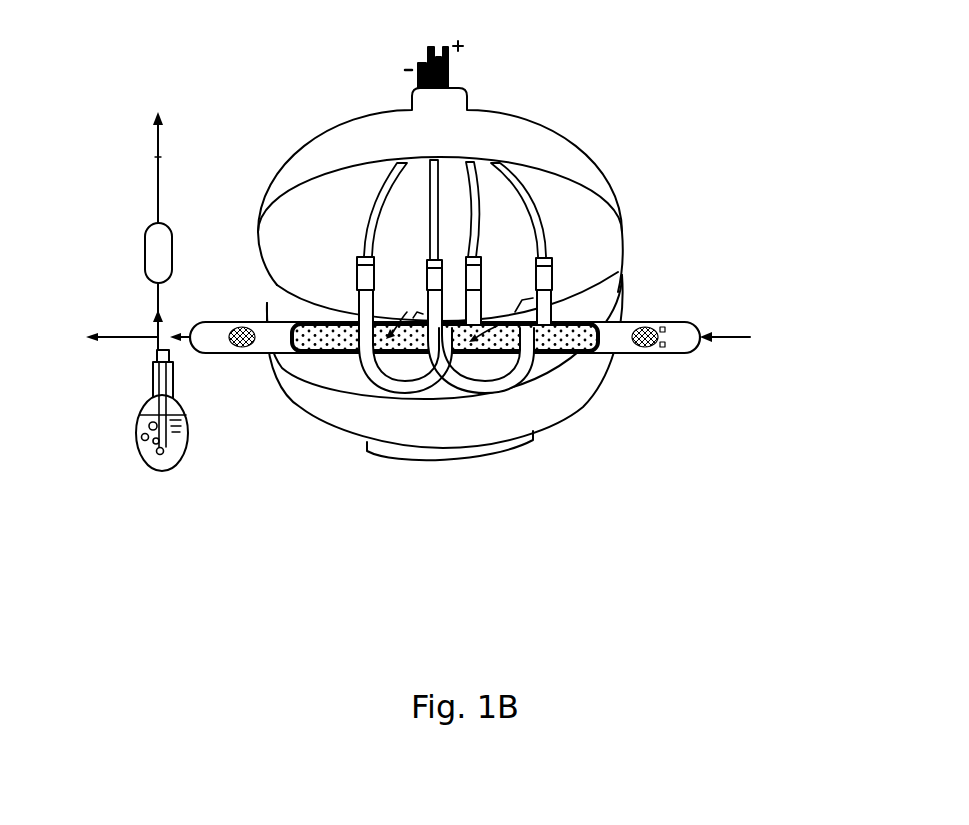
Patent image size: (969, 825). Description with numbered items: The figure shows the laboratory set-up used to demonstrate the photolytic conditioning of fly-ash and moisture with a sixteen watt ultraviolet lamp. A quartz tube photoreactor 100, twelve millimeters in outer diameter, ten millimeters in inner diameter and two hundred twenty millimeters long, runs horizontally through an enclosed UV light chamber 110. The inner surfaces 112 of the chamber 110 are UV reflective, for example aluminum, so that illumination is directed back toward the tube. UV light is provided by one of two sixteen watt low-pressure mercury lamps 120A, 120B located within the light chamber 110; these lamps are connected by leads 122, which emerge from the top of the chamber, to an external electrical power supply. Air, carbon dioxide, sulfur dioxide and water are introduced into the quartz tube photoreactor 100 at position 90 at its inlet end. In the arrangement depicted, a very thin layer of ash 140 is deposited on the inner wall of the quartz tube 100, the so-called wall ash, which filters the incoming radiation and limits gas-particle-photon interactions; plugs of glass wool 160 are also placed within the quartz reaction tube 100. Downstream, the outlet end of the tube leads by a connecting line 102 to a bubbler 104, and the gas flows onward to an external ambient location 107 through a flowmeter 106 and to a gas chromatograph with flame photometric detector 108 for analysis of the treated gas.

The inlet position 90 is at (796, 365).
The quartz tube photoreactor 100 is at (449, 406).
The outlet line to bubbler 102 is at (167, 333).
The bubbler 104 is at (177, 407).
The flowmeter 106 is at (143, 233).
The external ambient location 107 is at (139, 149).
The gas chromatograph with flame photometric detector 108 is at (126, 334).
The UV light chamber 110 is at (421, 430).
The inner surfaces 112 is at (210, 490).
The low-pressure mercury lamp 120A is at (547, 288).
The low-pressure mercury lamp 120B is at (357, 288).
The leads 122 is at (430, 55).
The thin layer of ash 140 is at (551, 336).
The glass wool 160 is at (643, 350).